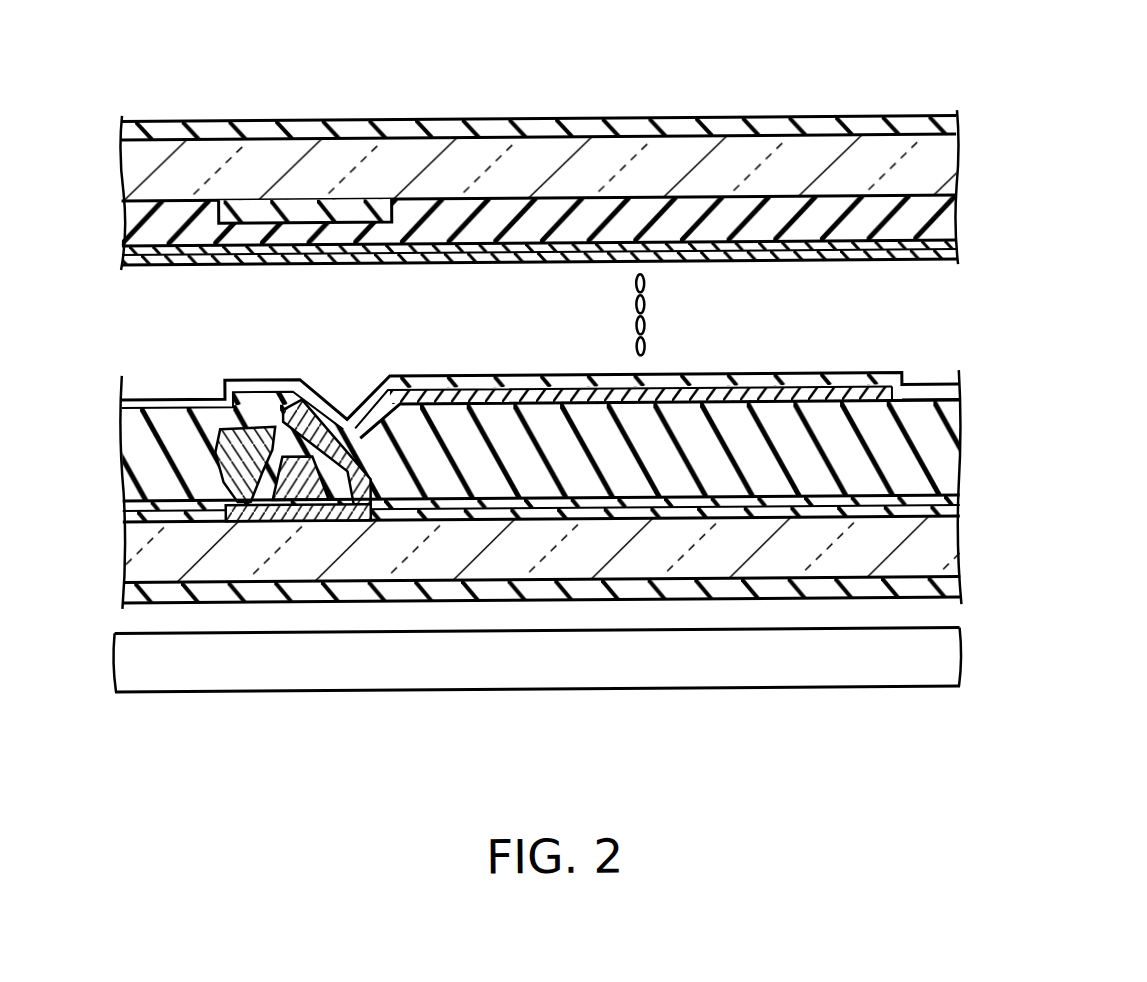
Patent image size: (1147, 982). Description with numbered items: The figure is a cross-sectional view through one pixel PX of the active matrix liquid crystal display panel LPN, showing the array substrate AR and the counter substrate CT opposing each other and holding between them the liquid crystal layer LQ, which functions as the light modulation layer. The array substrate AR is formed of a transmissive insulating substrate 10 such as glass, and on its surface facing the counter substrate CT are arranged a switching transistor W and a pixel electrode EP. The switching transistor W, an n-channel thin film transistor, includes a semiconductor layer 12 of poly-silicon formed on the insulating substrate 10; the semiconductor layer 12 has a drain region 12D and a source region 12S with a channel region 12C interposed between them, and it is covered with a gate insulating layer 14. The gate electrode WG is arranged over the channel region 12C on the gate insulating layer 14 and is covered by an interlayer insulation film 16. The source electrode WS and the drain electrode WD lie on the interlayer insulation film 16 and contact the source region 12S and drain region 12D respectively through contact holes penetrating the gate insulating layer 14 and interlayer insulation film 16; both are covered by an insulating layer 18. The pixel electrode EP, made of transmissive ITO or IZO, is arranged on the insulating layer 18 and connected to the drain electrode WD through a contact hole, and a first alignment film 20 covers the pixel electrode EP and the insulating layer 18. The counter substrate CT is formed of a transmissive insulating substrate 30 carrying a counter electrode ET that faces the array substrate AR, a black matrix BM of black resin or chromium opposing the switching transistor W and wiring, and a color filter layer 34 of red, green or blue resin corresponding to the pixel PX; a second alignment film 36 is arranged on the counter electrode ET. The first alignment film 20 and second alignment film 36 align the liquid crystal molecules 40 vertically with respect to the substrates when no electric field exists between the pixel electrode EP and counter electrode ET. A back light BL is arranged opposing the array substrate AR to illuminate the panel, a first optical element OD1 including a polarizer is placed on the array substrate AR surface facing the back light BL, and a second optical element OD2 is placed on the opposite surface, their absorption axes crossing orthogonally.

The insulating substrate 10 is at (122, 547).
The semiconductor layer 12 is at (318, 519).
The source region 12S is at (233, 519).
The channel region 12C is at (290, 519).
The drain region 12D is at (356, 519).
The gate insulating layer 14 is at (122, 517).
The interlayer insulation film 16 is at (122, 498).
The insulating layer 18 is at (122, 439).
The first alignment film 20 is at (167, 397).
The insulating substrate 30 is at (123, 167).
The color filter layer 34 is at (575, 226).
The second alignment film 36 is at (124, 256).
The liquid crystal molecules 40 is at (633, 340).
The black matrix BM is at (313, 207).
The pixel electrode EP is at (484, 376).
The counter electrode ET is at (825, 246).
The switching transistor W is at (334, 560).
The source electrode WS is at (240, 412).
The gate electrode WG is at (297, 410).
The drain electrode WD is at (347, 425).
The first optical element OD1 is at (948, 592).
The second optical element OD2 is at (947, 129).
The back light BL is at (945, 663).
The counter substrate CT is at (993, 136).
The liquid crystal layer LQ is at (993, 268).
The array substrate AR is at (993, 388).
The liquid crystal display panel LPN is at (1069, 137).
The pixel PX is at (945, 710).